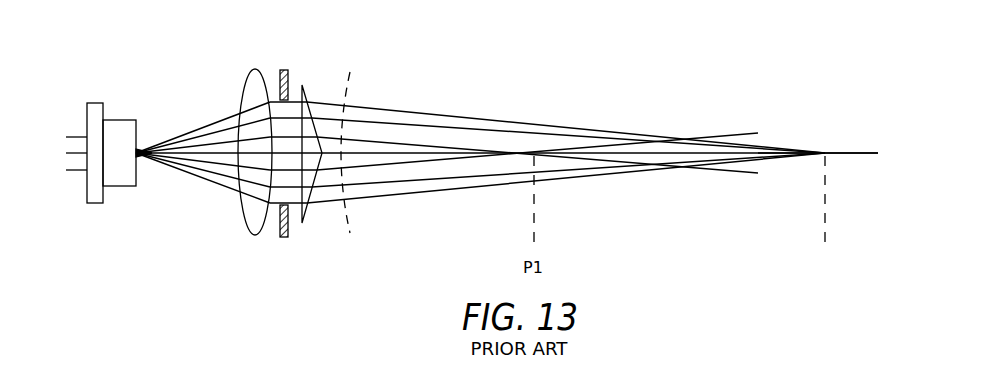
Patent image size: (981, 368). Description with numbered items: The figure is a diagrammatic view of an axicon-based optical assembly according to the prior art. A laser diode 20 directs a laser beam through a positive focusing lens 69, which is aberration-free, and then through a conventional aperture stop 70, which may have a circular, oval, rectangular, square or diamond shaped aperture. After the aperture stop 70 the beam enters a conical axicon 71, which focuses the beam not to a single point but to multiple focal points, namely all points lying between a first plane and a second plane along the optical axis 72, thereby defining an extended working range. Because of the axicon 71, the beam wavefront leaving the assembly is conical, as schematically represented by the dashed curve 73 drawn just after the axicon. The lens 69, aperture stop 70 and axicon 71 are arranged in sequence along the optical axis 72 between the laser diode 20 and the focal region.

The laser diode 20 is at (128, 120).
The positive focusing lens 69 is at (240, 82).
The aperture stop 70 is at (283, 70).
The conical axicon 71 is at (305, 95).
The optical axis 72 is at (838, 152).
The conical beam wavefront 73 is at (348, 222).